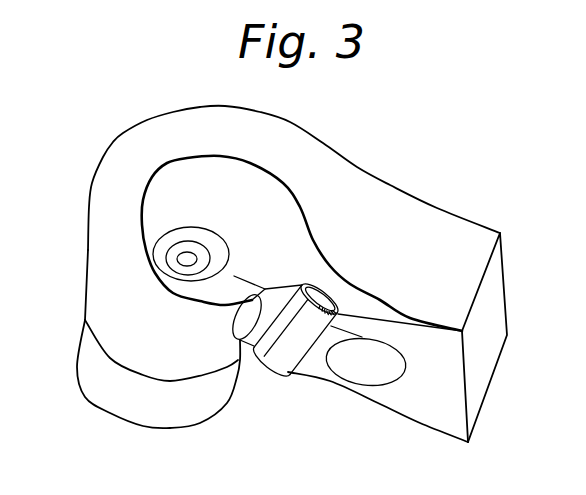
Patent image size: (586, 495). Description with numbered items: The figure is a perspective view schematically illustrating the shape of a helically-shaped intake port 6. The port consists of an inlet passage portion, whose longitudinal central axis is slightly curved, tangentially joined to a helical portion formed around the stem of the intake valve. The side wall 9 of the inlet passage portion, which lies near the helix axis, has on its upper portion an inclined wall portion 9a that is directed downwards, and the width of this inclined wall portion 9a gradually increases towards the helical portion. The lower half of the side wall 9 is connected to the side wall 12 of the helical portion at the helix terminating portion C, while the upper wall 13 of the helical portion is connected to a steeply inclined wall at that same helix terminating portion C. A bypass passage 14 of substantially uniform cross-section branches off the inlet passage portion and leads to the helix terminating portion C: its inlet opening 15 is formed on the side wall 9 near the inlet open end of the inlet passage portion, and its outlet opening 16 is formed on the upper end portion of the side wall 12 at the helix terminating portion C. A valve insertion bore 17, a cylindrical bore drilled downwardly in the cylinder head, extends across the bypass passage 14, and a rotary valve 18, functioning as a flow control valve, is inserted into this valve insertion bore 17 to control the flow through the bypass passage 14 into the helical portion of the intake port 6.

The helically-shaped intake port 6 is at (452, 203).
The side wall 9 is at (422, 418).
The inclined wall portion 9a is at (350, 287).
The side wall of the helical portion 12 is at (98, 312).
The upper wall of the helical portion 13 is at (117, 253).
The bypass passage 14 is at (320, 368).
The inlet opening 15 is at (363, 381).
The outlet opening 16 is at (237, 321).
The valve insertion bore 17 is at (318, 288).
The rotary valve 18 is at (280, 360).
The helix terminating portion C is at (236, 281).